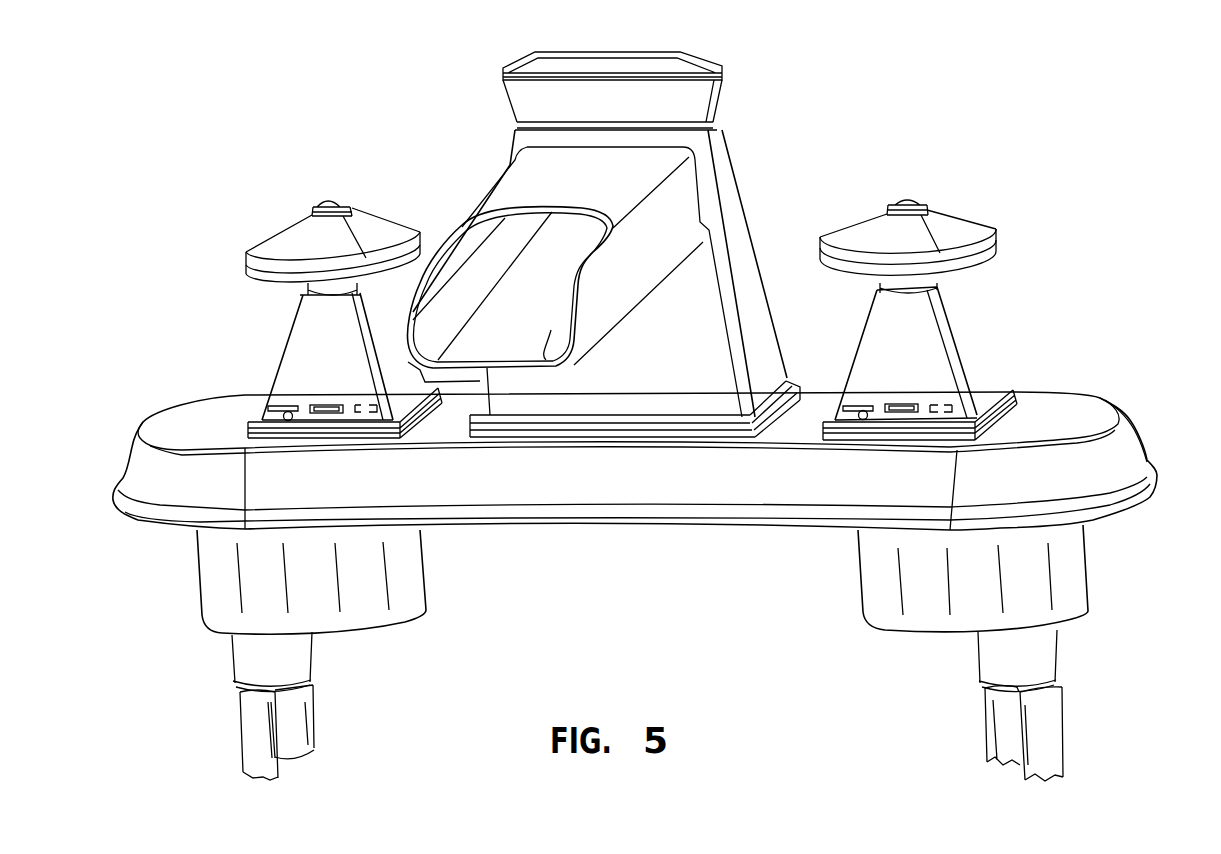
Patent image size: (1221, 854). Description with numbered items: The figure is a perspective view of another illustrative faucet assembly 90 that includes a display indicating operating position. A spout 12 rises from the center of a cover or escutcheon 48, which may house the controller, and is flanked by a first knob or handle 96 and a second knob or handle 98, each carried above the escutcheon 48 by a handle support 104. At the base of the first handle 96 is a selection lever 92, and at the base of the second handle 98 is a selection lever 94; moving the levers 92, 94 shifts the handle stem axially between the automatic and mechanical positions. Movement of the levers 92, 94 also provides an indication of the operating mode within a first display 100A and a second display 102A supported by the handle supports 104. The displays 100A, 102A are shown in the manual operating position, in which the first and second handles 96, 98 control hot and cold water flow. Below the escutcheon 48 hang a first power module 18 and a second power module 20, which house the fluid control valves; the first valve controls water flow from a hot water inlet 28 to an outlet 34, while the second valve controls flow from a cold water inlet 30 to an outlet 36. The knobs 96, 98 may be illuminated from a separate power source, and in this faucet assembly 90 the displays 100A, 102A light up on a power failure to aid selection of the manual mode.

The faucet assembly 90 is at (947, 106).
The spout 12 is at (725, 158).
The first knob or handle 96 is at (258, 238).
The second knob or handle 98 is at (970, 228).
The handle support 104 is at (297, 325).
The first display 100A is at (323, 403).
The second display 102A is at (905, 407).
The selection lever 92 is at (277, 415).
The selection lever 94 is at (863, 407).
The escutcheon 48 is at (1097, 410).
The first power module 18 is at (187, 586).
The second power module 20 is at (1112, 580).
The hot water inlet 28 is at (260, 748).
The outlet 34 is at (302, 718).
The outlet 36 is at (997, 732).
The cold water inlet 30 is at (1043, 727).